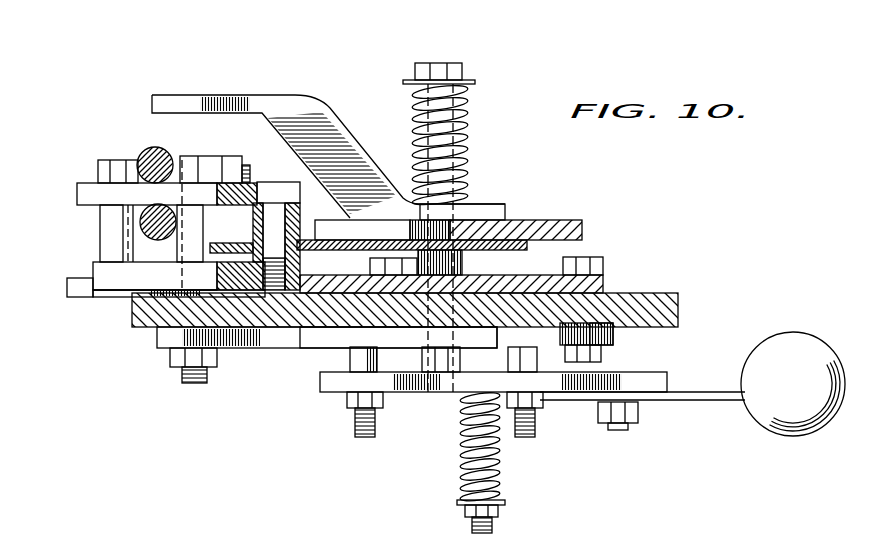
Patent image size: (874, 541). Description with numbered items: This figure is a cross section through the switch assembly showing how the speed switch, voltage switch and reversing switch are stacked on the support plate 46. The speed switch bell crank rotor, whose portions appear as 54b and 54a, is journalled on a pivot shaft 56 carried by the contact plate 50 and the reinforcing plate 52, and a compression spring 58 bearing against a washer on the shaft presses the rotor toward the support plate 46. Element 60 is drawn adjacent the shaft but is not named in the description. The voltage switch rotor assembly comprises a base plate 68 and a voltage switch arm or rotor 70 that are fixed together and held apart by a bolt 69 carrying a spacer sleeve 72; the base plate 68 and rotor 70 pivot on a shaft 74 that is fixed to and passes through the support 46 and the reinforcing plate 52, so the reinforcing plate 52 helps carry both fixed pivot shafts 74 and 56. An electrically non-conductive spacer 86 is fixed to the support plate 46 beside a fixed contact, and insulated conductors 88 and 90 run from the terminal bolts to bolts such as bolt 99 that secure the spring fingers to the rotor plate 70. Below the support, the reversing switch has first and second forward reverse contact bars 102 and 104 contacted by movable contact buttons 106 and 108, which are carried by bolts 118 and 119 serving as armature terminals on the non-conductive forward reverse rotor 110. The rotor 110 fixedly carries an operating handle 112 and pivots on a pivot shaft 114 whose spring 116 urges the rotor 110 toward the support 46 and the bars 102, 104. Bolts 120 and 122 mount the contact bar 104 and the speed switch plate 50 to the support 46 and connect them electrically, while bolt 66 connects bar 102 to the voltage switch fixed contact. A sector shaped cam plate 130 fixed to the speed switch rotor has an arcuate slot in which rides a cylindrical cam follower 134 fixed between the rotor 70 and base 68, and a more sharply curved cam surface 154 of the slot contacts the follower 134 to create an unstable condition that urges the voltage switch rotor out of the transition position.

The support plate 46 is at (660, 294).
The contact plate 50 is at (603, 283).
The reinforcing plate 52 is at (157, 338).
The speed switch rotor portion 54a is at (550, 220).
The speed switch rotor portion 54b is at (250, 94).
The pivot shaft 56 is at (452, 66).
The compression spring 58 is at (150, 150).
The threaded sleeve nut 60 is at (465, 266).
The bolt 66 is at (405, 346).
The base plate 68 is at (118, 291).
The bolt 69 is at (97, 177).
The voltage switch rotor 70 is at (77, 195).
The spacer sleeve 72 is at (100, 253).
The shaft 74 is at (185, 251).
The spacer 86 is at (67, 289).
The insulated conductor 88 is at (107, 533).
The insulated conductor 90 is at (141, 233).
The bolt 99 is at (282, 533).
The forward reverse contact bar 102 is at (613, 334).
The forward reverse contact bar 104 is at (572, 323).
The movable contact button 106 is at (515, 378).
The movable contact button 108 is at (345, 358).
The forward reverse rotor 110 is at (320, 385).
The operating handle 112 is at (787, 434).
The pivot shaft 114 is at (494, 529).
The spring 116 is at (500, 456).
The bolt 118 is at (525, 437).
The bolt 119 is at (355, 430).
The bolt 120 is at (385, 347).
The bolt 122 is at (604, 352).
The cam plate 130 is at (300, 262).
The cam follower 134 is at (262, 225).
The cam surface 154 is at (328, 237).